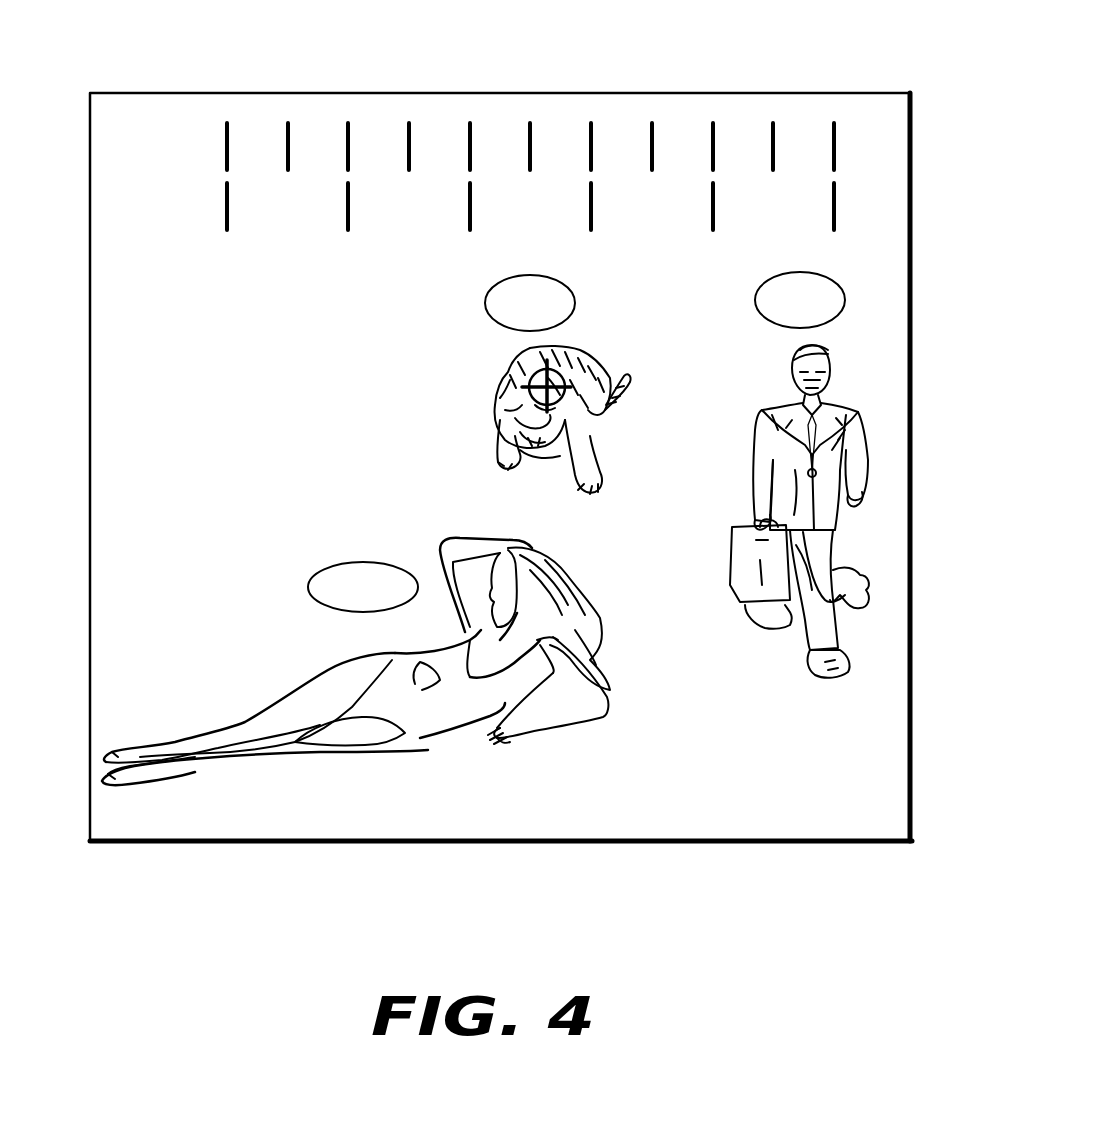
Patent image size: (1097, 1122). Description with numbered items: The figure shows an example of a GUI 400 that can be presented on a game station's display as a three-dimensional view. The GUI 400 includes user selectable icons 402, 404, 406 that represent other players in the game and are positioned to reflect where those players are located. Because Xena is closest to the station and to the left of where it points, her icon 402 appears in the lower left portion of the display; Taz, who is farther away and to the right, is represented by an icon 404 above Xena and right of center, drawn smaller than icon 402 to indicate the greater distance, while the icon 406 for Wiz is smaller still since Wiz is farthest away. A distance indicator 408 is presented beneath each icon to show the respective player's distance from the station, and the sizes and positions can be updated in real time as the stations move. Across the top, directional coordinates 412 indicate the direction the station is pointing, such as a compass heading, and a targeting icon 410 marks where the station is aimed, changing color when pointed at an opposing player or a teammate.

The GUI 400 is at (793, 80).
The icon 402 is at (290, 700).
The icon 404 is at (766, 400).
The icon 406 is at (582, 452).
The distance indicator 408 is at (508, 498).
The targeting icon 410 is at (530, 384).
The directional coordinates 412 is at (207, 135).